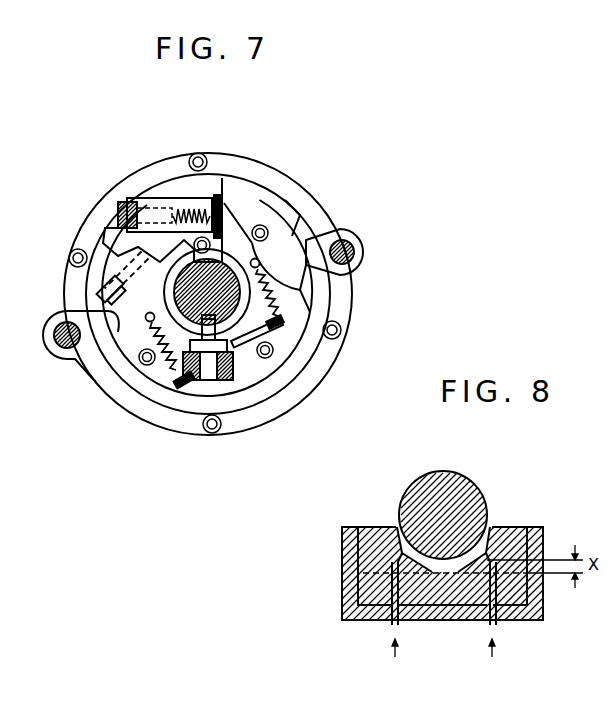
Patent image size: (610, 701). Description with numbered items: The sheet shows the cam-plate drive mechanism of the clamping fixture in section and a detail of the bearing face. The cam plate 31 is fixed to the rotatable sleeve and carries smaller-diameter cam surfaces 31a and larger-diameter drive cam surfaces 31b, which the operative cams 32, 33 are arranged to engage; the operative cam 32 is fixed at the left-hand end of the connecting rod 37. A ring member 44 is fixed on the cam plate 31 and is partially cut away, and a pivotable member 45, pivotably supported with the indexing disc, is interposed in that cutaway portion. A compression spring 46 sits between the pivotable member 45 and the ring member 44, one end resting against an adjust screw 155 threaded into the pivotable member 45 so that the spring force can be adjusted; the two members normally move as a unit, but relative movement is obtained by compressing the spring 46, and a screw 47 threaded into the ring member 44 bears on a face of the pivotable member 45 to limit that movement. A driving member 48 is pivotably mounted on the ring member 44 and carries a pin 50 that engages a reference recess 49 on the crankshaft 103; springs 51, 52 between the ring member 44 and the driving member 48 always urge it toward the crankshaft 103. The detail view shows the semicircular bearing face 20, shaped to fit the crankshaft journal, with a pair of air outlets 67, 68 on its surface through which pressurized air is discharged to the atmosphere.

In FIG. 7, the cam plate 31 is at (108, 217).
In FIG. 7, the smaller-diameter cam surfaces 31a is at (348, 311).
In FIG. 7, the larger-diameter drive cam surfaces 31b is at (268, 185).
In FIG. 7, the operative cam 32 is at (328, 274).
In FIG. 7, the operative cam 33 is at (66, 310).
In FIG. 7, the connecting rod 37 is at (352, 252).
In FIG. 7, the ring member 44 is at (290, 303).
In FIG. 7, the pivotable member 45 is at (160, 198).
In FIG. 7, the compression spring 46 is at (218, 197).
In FIG. 7, the screw 47 is at (100, 290).
In FIG. 7, the driving member 48 is at (228, 380).
In FIG. 7, the reference recess 49 is at (224, 352).
In FIG. 7, the pin 50 is at (205, 378).
In FIG. 7, the spring 51 is at (242, 240).
In FIG. 7, the spring 52 is at (167, 360).
In FIG. 7, the crankshaft 103 is at (233, 268).
In FIG. 8, the crankshaft 103 is at (452, 475).
In FIG. 7, the adjust screw 155 is at (122, 185).
In FIG. 8, the air outlet 67 is at (402, 551).
In FIG. 8, the air outlet 68 is at (490, 551).
In FIG. 8, the bearing face 20 is at (435, 575).